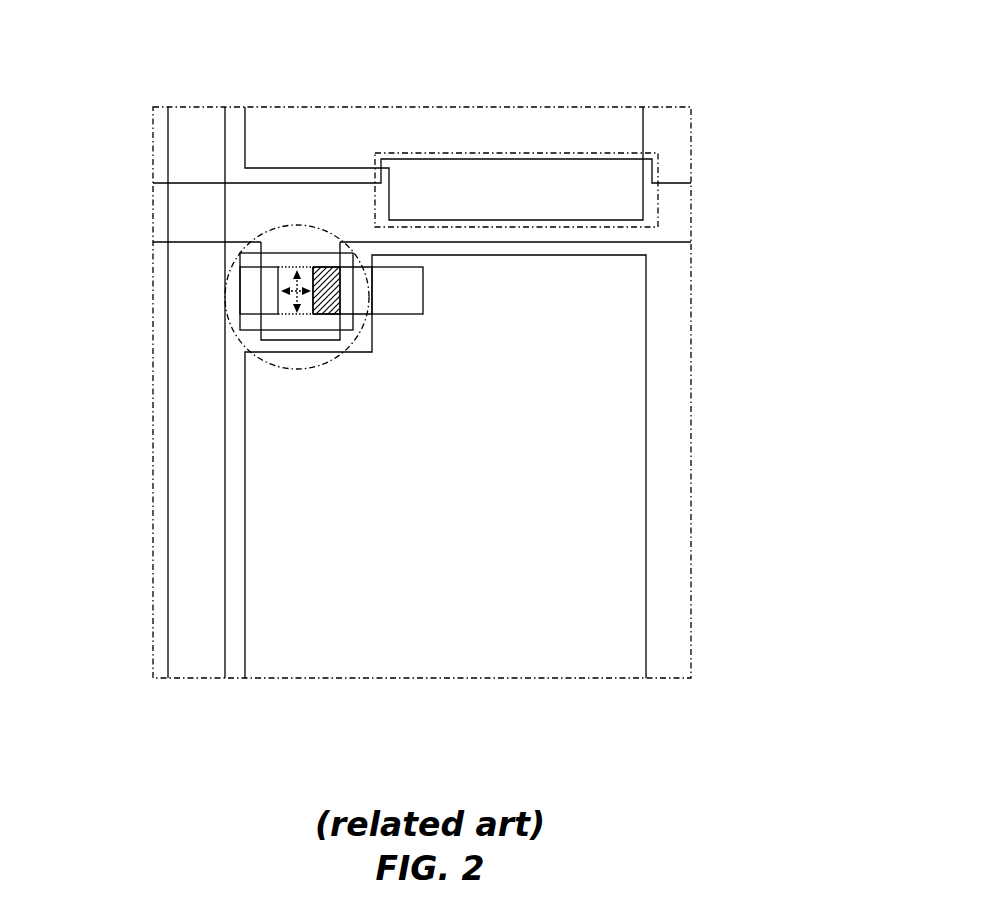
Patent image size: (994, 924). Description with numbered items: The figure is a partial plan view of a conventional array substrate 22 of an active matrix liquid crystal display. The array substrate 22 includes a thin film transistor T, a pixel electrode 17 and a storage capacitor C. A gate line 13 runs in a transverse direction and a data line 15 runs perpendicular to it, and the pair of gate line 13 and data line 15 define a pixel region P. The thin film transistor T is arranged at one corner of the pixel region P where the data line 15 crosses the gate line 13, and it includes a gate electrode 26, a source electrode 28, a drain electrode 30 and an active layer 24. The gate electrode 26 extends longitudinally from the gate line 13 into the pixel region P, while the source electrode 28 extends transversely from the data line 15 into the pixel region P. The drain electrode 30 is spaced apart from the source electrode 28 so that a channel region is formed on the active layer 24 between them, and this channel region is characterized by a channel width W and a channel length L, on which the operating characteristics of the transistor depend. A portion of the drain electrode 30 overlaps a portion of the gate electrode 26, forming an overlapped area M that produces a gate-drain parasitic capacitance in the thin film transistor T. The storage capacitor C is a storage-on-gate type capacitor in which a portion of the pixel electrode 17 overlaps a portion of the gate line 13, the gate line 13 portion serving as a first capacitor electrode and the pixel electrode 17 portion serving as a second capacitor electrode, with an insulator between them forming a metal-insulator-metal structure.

The array substrate 22 is at (586, 108).
The data line 15 is at (168, 485).
The gate line 13 is at (672, 205).
The pixel electrode 17 is at (646, 503).
The active layer 24 is at (240, 282).
The source electrode 28 is at (232, 315).
The gate electrode 26 is at (260, 340).
The drain electrode 30 is at (422, 288).
The thin film transistor T is at (297, 227).
The storage capacitor C is at (484, 152).
The pixel region P is at (507, 466).
The channel width W is at (296, 318).
The channel length L is at (308, 296).
The overlapped area M is at (330, 312).